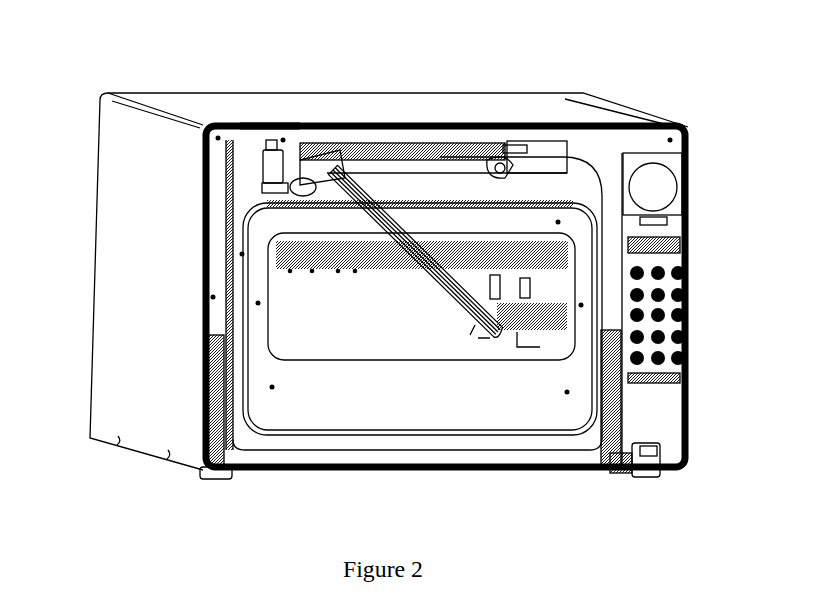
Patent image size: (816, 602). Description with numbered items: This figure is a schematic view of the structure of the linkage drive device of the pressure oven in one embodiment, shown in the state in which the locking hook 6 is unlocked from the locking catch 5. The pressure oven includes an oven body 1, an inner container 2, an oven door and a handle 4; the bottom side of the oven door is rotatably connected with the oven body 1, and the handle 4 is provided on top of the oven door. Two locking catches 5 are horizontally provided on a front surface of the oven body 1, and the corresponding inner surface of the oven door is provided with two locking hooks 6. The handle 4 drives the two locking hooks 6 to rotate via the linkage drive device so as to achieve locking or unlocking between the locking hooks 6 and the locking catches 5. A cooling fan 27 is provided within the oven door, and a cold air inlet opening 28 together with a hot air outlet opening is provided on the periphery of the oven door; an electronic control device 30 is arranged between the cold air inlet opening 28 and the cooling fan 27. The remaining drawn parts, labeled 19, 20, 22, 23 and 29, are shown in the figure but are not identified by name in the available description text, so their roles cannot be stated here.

The oven body 1 is at (120, 203).
The inner container 2 is at (540, 412).
The handle 4 is at (447, 280).
The locking catch 5 is at (340, 140).
The locking hook 6 is at (478, 176).
The cavity liner with gasket 19 is at (292, 204).
The connector block 20 is at (297, 140).
The top frame edge 22 is at (258, 128).
The wire connector 23 is at (265, 184).
The cooling fan 27 is at (662, 180).
The cold air inlet opening 28 is at (645, 478).
The bottom left foot 29 is at (238, 472).
The electronic control device 30 is at (668, 303).